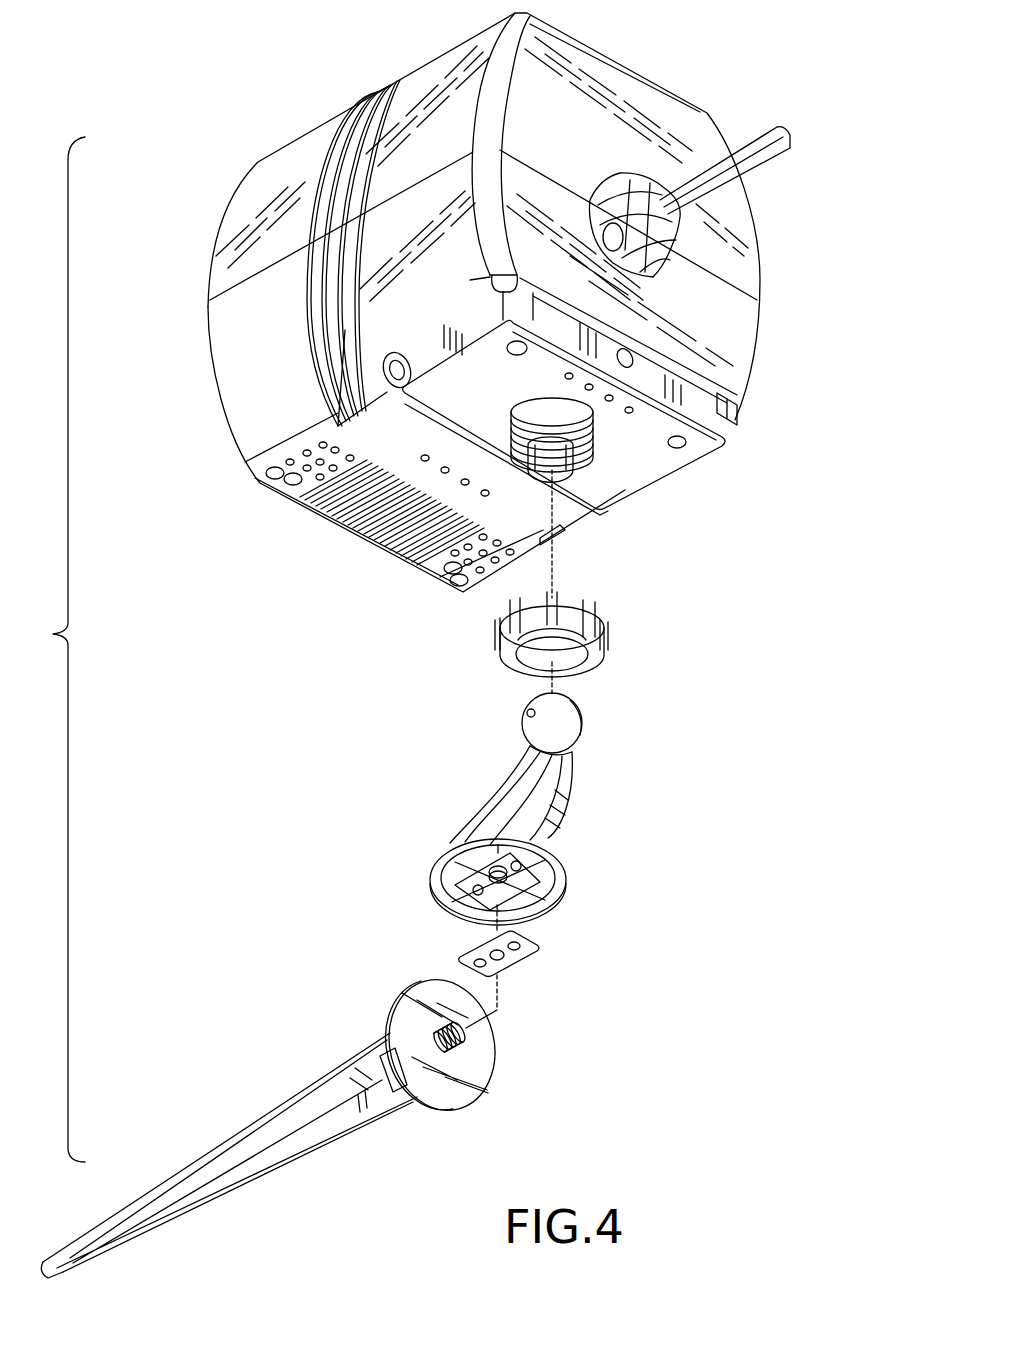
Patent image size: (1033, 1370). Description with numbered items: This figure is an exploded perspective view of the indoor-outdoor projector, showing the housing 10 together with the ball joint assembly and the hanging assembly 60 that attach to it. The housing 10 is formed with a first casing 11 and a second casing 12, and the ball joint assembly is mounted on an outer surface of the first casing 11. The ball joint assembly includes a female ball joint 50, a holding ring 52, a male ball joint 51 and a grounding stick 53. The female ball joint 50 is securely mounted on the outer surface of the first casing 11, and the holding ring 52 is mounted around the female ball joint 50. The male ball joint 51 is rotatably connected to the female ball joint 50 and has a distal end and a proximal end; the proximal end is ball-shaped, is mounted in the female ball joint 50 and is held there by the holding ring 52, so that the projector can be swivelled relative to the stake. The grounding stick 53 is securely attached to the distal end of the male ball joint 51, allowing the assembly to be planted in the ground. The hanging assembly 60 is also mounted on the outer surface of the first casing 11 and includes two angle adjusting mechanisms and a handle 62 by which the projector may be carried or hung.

The housing 10 is at (532, 302).
The first casing 11 is at (725, 333).
The second casing 12 is at (730, 223).
The female ball joint 50 is at (593, 430).
The male ball joint 51 is at (572, 718).
The holding ring 52 is at (598, 624).
The grounding stick 53 is at (305, 1138).
The hanging assembly 60 is at (682, 488).
The handle 62 is at (708, 404).